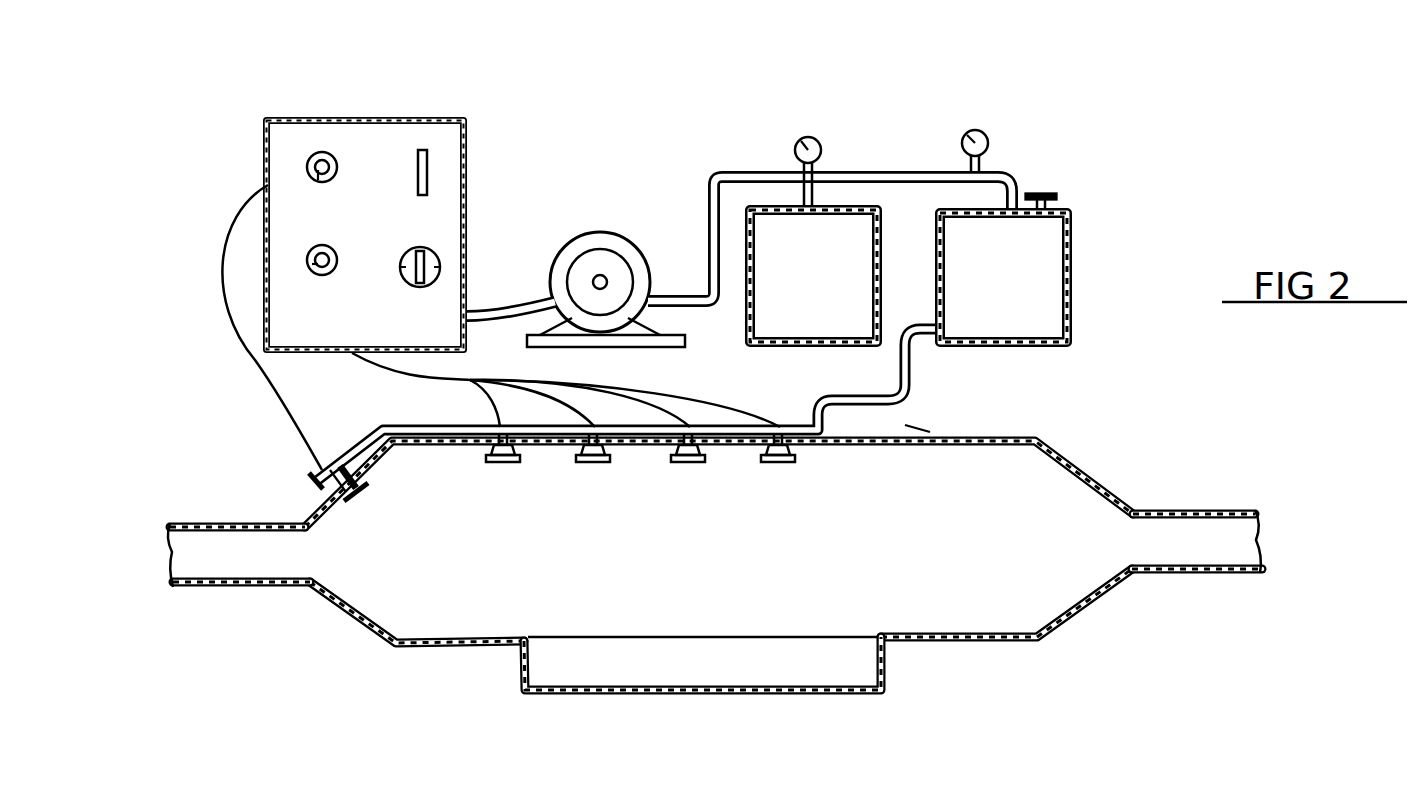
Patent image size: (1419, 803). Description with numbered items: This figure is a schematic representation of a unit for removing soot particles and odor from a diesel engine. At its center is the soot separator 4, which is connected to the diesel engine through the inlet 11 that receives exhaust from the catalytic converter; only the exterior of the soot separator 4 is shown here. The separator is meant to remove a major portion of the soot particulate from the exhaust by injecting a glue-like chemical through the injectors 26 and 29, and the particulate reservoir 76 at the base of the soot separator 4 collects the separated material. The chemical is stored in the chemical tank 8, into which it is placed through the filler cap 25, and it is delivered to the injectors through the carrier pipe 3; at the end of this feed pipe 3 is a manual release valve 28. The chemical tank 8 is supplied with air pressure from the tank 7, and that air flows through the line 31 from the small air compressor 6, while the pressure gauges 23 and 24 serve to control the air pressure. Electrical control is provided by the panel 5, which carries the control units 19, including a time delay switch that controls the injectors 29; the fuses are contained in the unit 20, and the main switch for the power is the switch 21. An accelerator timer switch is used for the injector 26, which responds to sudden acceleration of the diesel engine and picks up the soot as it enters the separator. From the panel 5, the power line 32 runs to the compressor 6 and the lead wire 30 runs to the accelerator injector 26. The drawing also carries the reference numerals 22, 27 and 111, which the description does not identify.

The carrier pipe 3 is at (916, 378).
The soot separator 4 is at (1025, 437).
The panel 5 is at (313, 117).
The air compressor 6 is at (598, 232).
The tank 7 is at (845, 225).
The chemical tank 8 is at (1073, 272).
The inlet 11 is at (256, 585).
The outlet pipe 111 is at (1175, 572).
The control units 19 is at (308, 172).
The fuse unit 20 is at (427, 145).
The main switch 21 is at (434, 260).
The control knob 22 is at (310, 270).
The pressure gauge 23 is at (808, 137).
The pressure gauge 24 is at (975, 128).
The filler cap 25 is at (1047, 192).
The accelerator injector 26 is at (317, 500).
The injection nozzle 27 is at (785, 437).
The manual release valve 28 is at (303, 477).
The injectors 29 is at (650, 392).
The lead wire 30 is at (300, 402).
The air line 31 is at (735, 173).
The power line 32 is at (497, 312).
The particulate reservoir 76 is at (888, 690).